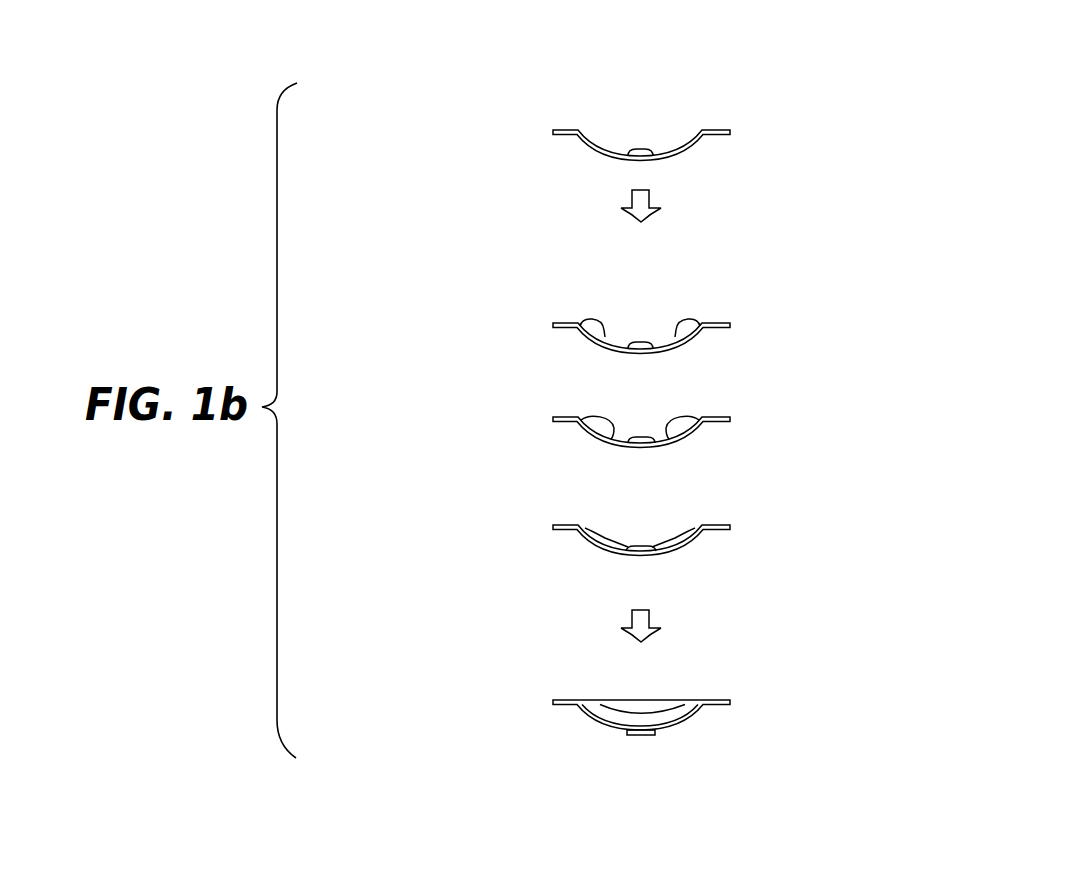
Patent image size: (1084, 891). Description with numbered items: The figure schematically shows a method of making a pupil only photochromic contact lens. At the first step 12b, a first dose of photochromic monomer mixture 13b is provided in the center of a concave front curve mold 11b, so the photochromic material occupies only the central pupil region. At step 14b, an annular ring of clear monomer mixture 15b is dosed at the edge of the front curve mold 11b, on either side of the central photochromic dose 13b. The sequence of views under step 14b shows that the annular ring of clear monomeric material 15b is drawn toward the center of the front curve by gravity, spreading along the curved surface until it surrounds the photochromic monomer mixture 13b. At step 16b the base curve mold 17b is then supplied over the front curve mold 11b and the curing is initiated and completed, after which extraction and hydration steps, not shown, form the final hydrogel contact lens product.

The front curve mold 11b is at (578, 128).
The step 12b is at (548, 160).
The photochromic monomer mixture 13b is at (644, 149).
The step 14b is at (425, 442).
The clear monomer mixture 15b is at (689, 322).
The step 16b is at (462, 708).
The base curve mold 17b is at (638, 720).